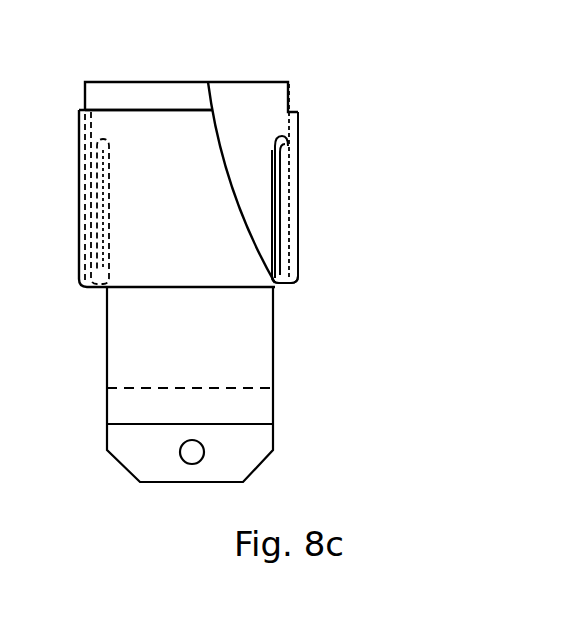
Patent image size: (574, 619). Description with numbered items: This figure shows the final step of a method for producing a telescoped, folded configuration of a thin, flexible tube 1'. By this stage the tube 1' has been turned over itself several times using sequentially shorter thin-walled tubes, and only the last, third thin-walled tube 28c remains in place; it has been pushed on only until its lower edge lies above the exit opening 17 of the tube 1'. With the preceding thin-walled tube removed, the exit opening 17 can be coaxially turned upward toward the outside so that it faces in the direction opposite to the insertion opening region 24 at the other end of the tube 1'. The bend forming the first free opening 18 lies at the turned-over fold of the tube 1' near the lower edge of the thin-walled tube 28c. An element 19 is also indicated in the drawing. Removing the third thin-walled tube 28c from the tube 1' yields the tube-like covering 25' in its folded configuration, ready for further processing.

The exit opening 17 is at (111, 110).
The third thin-walled tube 28c is at (292, 96).
The spring hook 19 is at (290, 140).
The tube-like covering 25' is at (372, 183).
The thin, flexible tube 1' is at (85, 184).
The first free opening 18 is at (285, 288).
The insertion opening region 24 is at (142, 457).